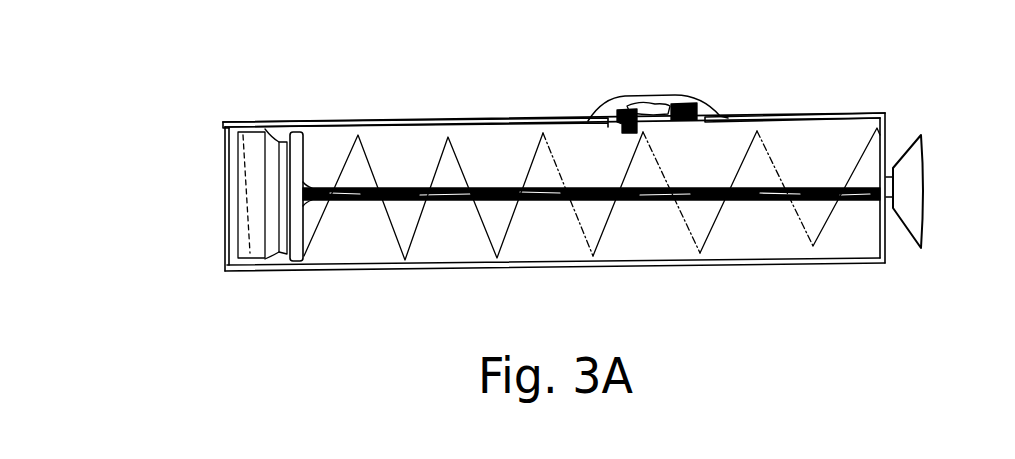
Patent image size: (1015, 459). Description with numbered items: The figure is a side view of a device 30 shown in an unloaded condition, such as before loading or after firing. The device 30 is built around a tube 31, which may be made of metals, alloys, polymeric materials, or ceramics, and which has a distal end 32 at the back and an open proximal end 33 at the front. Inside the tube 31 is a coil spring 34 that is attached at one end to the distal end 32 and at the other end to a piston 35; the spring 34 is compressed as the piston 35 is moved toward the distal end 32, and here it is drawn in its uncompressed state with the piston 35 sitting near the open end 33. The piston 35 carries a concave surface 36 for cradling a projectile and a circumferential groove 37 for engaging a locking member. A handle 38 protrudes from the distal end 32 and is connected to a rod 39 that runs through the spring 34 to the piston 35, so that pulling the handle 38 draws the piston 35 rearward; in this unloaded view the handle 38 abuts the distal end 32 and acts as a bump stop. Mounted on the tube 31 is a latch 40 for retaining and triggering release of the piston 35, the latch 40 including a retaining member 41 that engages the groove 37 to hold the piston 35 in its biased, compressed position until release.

The device 30 is at (643, 46).
The tube 31 is at (842, 263).
The distal end 32 is at (890, 125).
The open proximal end 33 is at (223, 212).
The coil spring 34 is at (713, 225).
The piston 35 is at (305, 151).
The concave surface 36 is at (247, 173).
The circumferential groove 37 is at (283, 140).
The handle 38 is at (926, 198).
The rod 39 is at (539, 203).
The latch 40 is at (700, 103).
The retaining member 41 is at (628, 125).